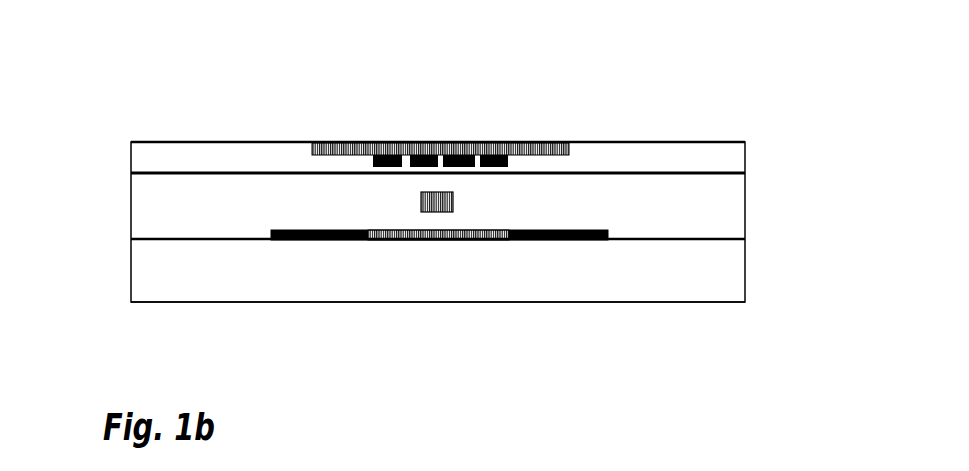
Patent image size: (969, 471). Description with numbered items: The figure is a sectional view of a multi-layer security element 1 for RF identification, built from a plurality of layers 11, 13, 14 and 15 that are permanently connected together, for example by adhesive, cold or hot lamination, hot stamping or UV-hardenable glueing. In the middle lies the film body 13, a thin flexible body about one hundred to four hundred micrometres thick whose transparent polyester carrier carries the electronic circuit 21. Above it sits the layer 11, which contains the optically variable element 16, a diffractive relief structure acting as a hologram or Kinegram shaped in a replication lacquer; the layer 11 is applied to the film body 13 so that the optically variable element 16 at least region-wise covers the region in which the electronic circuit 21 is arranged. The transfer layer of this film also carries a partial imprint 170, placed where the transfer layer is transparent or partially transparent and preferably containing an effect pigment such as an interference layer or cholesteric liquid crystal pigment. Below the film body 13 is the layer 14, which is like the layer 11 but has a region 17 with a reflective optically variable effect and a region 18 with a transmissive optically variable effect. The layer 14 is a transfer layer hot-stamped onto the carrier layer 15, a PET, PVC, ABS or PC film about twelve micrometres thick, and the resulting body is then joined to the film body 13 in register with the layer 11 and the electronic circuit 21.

The multi-layer security element 1 is at (612, 109).
The layer 11 is at (130, 163).
The film body 13 is at (130, 225).
The carrier layer 15 is at (130, 287).
The layer 14 is at (288, 227).
The optically variable element 16 is at (540, 142).
The partial imprint 170 is at (492, 142).
The region 17 is at (348, 241).
The region 18 is at (487, 243).
The electronic circuit 21 is at (438, 213).